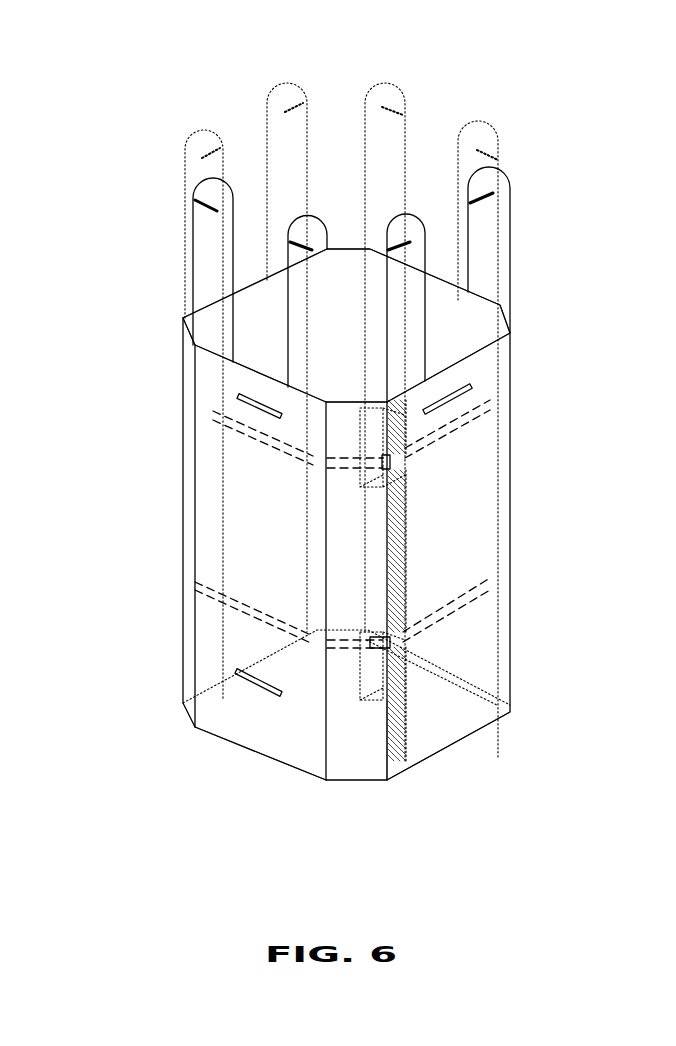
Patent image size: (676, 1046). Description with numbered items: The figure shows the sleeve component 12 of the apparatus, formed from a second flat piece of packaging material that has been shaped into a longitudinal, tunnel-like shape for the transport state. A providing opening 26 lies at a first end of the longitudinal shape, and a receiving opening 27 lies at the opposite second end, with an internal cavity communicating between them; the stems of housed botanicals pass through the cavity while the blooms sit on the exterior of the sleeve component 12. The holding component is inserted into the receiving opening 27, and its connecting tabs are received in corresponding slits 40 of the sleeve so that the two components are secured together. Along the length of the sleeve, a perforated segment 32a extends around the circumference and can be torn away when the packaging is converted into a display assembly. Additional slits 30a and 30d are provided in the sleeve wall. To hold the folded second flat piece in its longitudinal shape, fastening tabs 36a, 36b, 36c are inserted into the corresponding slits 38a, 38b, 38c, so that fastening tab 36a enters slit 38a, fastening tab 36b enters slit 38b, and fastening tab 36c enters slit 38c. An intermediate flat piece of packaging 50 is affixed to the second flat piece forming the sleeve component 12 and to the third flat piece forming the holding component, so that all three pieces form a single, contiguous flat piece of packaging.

The sleeve component 12 is at (151, 138).
The providing opening 26 is at (363, 352).
The receiving opening 27 is at (302, 750).
The slit 30a is at (260, 417).
The slit 30d is at (470, 373).
The perforated segment 32a is at (429, 440).
The fastening tab 36a is at (402, 427).
The fastening tab 36b is at (406, 507).
The fastening tab 36c is at (407, 685).
The slit 38a is at (386, 429).
The slit 38b is at (386, 495).
The slit 38c is at (384, 713).
The slit 40 is at (251, 686).
The intermediate flat piece of packaging 50 is at (478, 752).